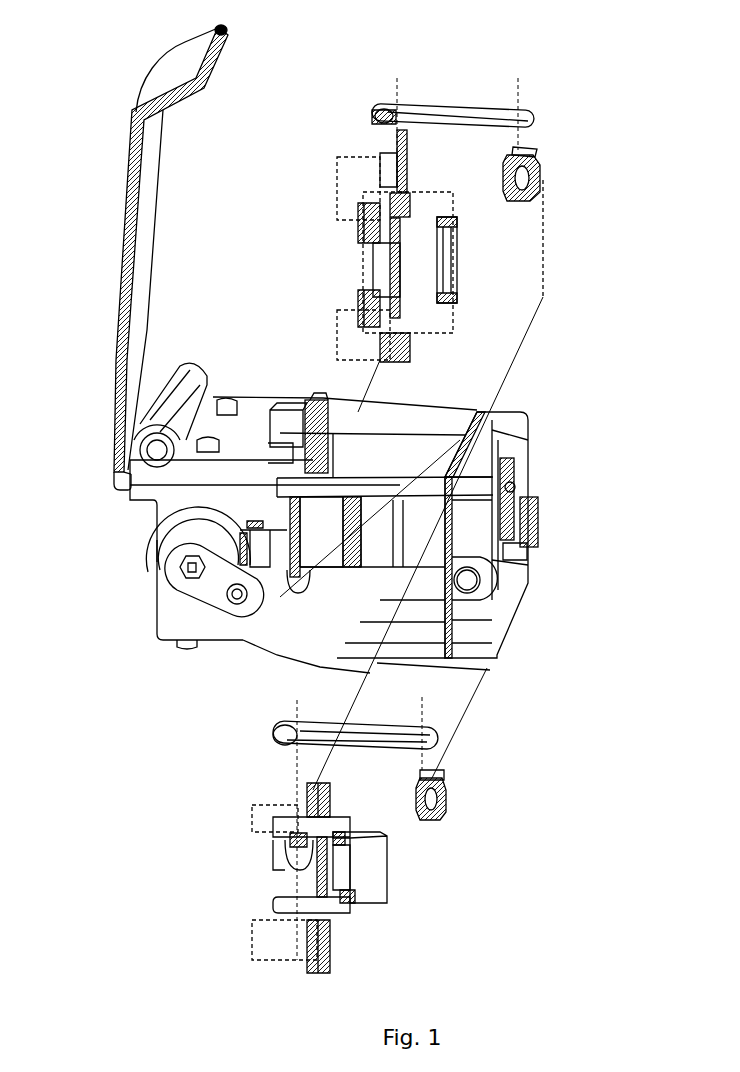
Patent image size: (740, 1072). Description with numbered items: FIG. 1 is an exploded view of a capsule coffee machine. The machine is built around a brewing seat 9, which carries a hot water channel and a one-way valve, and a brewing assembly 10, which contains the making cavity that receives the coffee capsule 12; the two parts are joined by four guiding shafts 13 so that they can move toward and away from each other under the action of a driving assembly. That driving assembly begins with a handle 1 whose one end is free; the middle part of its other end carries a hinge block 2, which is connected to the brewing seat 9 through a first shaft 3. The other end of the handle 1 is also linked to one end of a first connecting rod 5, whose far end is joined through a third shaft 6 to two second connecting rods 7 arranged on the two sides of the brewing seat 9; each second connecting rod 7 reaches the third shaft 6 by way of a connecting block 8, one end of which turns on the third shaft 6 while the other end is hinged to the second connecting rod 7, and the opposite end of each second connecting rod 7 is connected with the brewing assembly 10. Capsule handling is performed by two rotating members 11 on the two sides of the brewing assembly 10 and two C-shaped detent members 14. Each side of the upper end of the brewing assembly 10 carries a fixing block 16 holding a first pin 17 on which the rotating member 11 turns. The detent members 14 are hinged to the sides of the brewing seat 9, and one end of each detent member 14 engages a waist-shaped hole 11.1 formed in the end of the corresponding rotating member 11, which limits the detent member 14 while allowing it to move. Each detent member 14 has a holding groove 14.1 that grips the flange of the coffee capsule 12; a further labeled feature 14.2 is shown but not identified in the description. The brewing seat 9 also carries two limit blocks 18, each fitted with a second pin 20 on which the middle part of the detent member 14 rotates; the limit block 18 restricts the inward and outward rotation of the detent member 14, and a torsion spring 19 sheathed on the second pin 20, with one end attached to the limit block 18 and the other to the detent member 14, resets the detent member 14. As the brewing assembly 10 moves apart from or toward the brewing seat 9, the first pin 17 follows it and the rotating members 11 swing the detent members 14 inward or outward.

The handle 1 is at (140, 213).
The hinge block 2 is at (170, 393).
The first shaft 3 is at (148, 442).
The first connecting rod 5 is at (147, 523).
The third shaft 6 is at (175, 571).
The second connecting rod 7 is at (290, 627).
The connecting block 8 is at (207, 590).
The brewing seat 9 is at (148, 553).
The brewing assembly 10 is at (522, 457).
The rotating member 11 is at (465, 105).
The waist-shaped hole 11.1 is at (412, 100).
The coffee capsule 12 is at (290, 560).
The guiding shaft 13 is at (380, 495).
The detent member 14 is at (405, 267).
The holding groove 14.1 is at (373, 297).
The pin 14.2 is at (375, 220).
The fixing block 16 is at (533, 158).
The first pin 17 is at (520, 150).
The limit block 18 is at (392, 148).
The torsion spring 19 is at (430, 293).
The second pin 20 is at (372, 213).